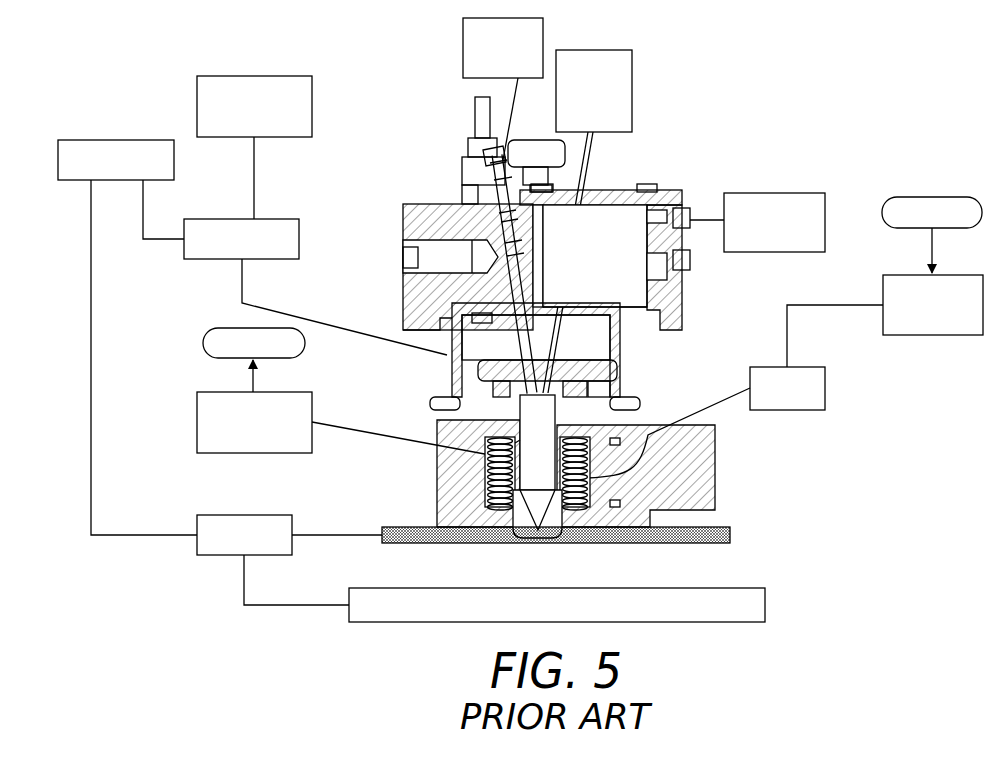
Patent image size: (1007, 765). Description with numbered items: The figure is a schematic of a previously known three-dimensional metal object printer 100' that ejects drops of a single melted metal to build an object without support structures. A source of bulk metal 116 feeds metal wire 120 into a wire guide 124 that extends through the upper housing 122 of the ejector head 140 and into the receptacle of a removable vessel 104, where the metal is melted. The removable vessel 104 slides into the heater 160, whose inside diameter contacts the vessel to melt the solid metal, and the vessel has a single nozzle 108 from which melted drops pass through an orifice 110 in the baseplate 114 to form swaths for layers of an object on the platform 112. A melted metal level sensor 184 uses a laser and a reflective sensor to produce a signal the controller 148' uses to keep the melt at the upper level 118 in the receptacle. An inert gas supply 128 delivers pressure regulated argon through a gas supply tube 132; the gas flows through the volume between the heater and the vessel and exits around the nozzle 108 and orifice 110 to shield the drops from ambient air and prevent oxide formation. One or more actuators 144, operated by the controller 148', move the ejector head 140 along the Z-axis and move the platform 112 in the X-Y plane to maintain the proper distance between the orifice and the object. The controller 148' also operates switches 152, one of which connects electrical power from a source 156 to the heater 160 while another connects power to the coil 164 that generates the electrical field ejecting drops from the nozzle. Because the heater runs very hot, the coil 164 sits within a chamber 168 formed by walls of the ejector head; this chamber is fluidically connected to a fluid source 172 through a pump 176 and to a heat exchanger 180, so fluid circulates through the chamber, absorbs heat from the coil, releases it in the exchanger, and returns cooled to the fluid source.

The 3D metal object printer 100' is at (800, 89).
The removable vessel 104 is at (541, 457).
The nozzle 108 is at (538, 522).
The orifice 110 is at (503, 541).
The platform 112 is at (765, 605).
The baseplate 114 is at (720, 527).
The source of bulk metal 116 is at (463, 52).
The upper level 118 is at (512, 400).
The metal wire 120 is at (532, 413).
The upper housing 122 is at (425, 204).
The wire guide 124 is at (513, 337).
The inert gas supply 128 is at (773, 192).
The gas supply tube 132 is at (703, 218).
The ejector head 140 is at (349, 318).
The actuators 144 is at (290, 555).
The controller 148' is at (116, 140).
The switches 152 is at (299, 241).
The electrical power source 156 is at (197, 110).
The heater 160 is at (515, 443).
The coil 164 is at (587, 448).
The chamber 168 is at (490, 455).
The fluid source 172 is at (930, 335).
The pump 176 is at (825, 390).
The heat exchanger 180 is at (253, 453).
The melted metal level sensor 184 is at (632, 72).